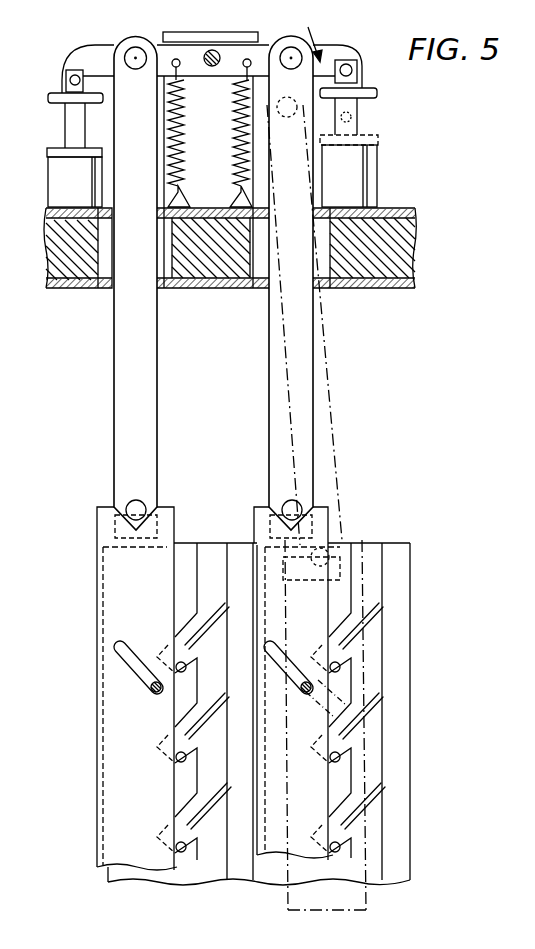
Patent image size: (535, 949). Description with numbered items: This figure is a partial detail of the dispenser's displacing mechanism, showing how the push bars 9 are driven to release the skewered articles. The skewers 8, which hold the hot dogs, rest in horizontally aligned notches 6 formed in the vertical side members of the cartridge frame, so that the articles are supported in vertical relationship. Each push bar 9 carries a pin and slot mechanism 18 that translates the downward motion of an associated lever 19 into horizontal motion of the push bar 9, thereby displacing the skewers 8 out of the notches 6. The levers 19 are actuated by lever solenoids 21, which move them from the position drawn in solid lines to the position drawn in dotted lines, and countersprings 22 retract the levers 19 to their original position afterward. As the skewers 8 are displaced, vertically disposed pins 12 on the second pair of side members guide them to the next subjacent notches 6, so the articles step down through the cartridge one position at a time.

The notches 6 is at (195, 545).
The skewers 8 is at (345, 841).
The push bar 9 is at (117, 616).
The pins 12 is at (209, 607).
The pin and slot mechanism 18 is at (134, 648).
The levers 19 is at (143, 313).
The lever solenoids 21 is at (80, 196).
The countersprings 22 is at (240, 126).